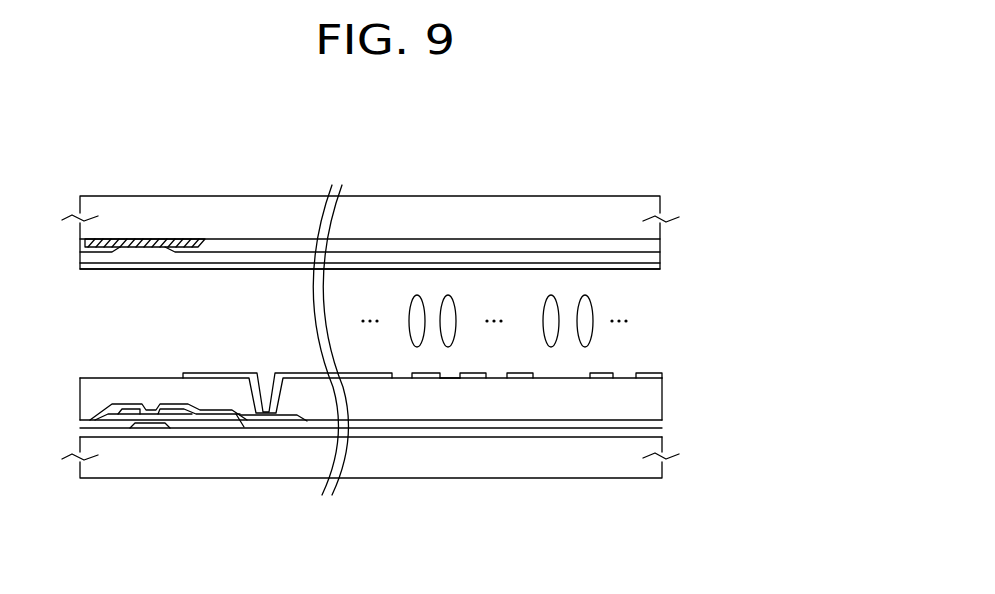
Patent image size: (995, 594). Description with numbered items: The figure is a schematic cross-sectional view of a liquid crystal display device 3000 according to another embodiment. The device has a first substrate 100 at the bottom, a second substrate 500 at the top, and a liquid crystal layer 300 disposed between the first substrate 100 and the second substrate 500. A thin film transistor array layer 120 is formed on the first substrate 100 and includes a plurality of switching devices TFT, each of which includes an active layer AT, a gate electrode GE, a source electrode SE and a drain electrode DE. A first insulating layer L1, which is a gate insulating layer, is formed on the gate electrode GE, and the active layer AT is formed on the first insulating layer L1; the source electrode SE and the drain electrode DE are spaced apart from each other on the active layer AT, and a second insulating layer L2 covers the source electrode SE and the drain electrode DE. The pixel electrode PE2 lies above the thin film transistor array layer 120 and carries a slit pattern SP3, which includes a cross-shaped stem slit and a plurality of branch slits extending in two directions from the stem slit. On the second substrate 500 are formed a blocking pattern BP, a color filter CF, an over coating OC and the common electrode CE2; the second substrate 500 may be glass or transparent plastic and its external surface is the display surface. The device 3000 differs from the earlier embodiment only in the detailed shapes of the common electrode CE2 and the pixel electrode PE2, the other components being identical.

The liquid crystal display device 3000 is at (599, 133).
The second substrate 500 is at (662, 208).
The liquid crystal layer 300 is at (666, 274).
The thin film transistor array layer 120 is at (666, 378).
The first substrate 100 is at (662, 467).
The blocking pattern BP is at (121, 243).
The color filter CF is at (422, 245).
The over coating OC is at (479, 258).
The common electrode CE2 is at (540, 268).
The pixel electrode PE2 is at (665, 375).
The source electrode SE is at (127, 414).
The gate electrode GE is at (143, 428).
The drain electrode DE is at (167, 414).
The active layer AT is at (195, 425).
The first insulating layer L1 is at (287, 437).
The second insulating layer L2 is at (243, 430).
The slit pattern SP3 is at (446, 372).
The switching device TFT is at (163, 489).